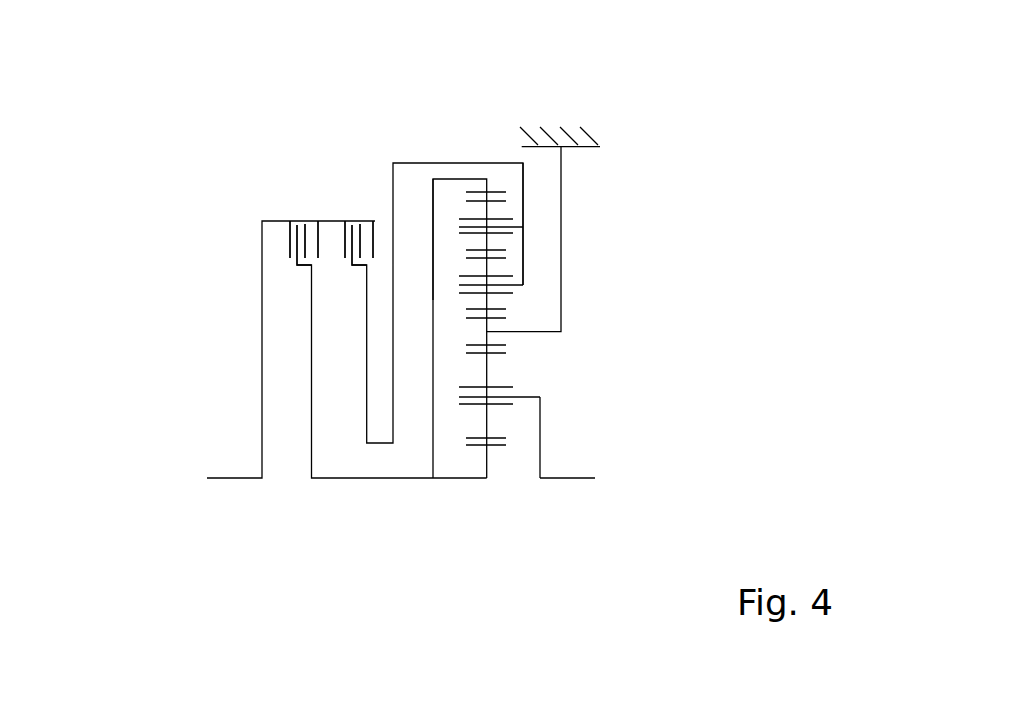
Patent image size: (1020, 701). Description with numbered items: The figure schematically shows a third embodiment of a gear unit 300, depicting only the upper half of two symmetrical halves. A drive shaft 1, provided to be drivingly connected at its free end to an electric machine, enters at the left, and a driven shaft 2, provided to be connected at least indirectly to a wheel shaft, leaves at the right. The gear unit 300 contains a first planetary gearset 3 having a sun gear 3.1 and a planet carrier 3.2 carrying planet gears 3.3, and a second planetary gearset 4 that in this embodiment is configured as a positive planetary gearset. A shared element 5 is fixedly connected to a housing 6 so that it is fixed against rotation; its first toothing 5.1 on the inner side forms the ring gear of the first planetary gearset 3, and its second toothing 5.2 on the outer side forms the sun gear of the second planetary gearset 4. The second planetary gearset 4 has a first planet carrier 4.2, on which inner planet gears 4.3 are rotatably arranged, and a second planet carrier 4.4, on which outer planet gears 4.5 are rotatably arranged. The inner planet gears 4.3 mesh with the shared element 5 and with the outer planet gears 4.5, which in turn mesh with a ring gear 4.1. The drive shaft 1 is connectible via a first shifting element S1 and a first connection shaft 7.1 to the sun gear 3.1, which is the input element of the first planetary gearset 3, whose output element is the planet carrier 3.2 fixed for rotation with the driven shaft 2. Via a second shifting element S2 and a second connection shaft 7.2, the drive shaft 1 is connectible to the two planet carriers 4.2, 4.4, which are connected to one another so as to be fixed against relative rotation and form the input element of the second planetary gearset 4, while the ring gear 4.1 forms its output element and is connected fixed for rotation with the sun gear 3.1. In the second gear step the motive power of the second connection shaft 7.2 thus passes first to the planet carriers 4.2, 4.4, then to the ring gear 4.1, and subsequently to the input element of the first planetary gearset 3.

The gear unit 300 is at (185, 138).
The drive shaft 1 is at (233, 477).
The driven shaft 2 is at (580, 478).
The first planetary gearset 3 is at (521, 379).
The sun gear 3.1 is at (493, 447).
The planet carrier 3.2 is at (530, 397).
The planet gears 3.3 is at (483, 421).
The second planetary gearset 4 is at (533, 247).
The ring gear 4.1 is at (497, 190).
The first planet carrier 4.2 is at (523, 215).
The inner planet gears 4.3 is at (483, 268).
The second planet carrier 4.4 is at (523, 273).
The outer planet gears 4.5 is at (485, 209).
The shared element 5 is at (487, 336).
The first toothing 5.1 is at (502, 345).
The second toothing 5.2 is at (502, 318).
The housing 6 is at (555, 137).
The first connection shaft 7.1 is at (311, 453).
The second connection shaft 7.2 is at (392, 215).
The first shifting element S1 is at (284, 237).
The second shifting element S2 is at (354, 214).